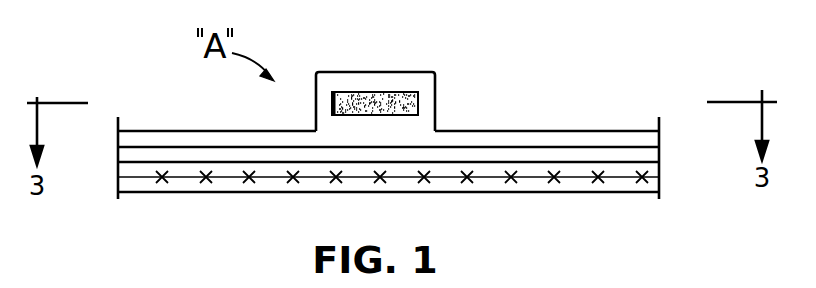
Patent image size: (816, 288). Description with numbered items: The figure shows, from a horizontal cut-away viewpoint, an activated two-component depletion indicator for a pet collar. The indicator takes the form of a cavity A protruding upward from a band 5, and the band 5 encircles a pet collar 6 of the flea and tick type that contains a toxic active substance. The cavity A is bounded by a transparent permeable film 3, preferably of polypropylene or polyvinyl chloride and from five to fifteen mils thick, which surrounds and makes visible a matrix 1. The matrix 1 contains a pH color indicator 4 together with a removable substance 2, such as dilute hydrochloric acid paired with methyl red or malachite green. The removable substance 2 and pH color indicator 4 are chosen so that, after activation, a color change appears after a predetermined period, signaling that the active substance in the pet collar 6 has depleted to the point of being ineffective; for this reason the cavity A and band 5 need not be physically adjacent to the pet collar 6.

The matrix 1 is at (418, 99).
The removable substance 2 is at (381, 92).
The transparent permeable film 3 is at (322, 78).
The pH color indicator 4 is at (358, 92).
The band 5 is at (198, 131).
The pet collar 6 is at (650, 179).